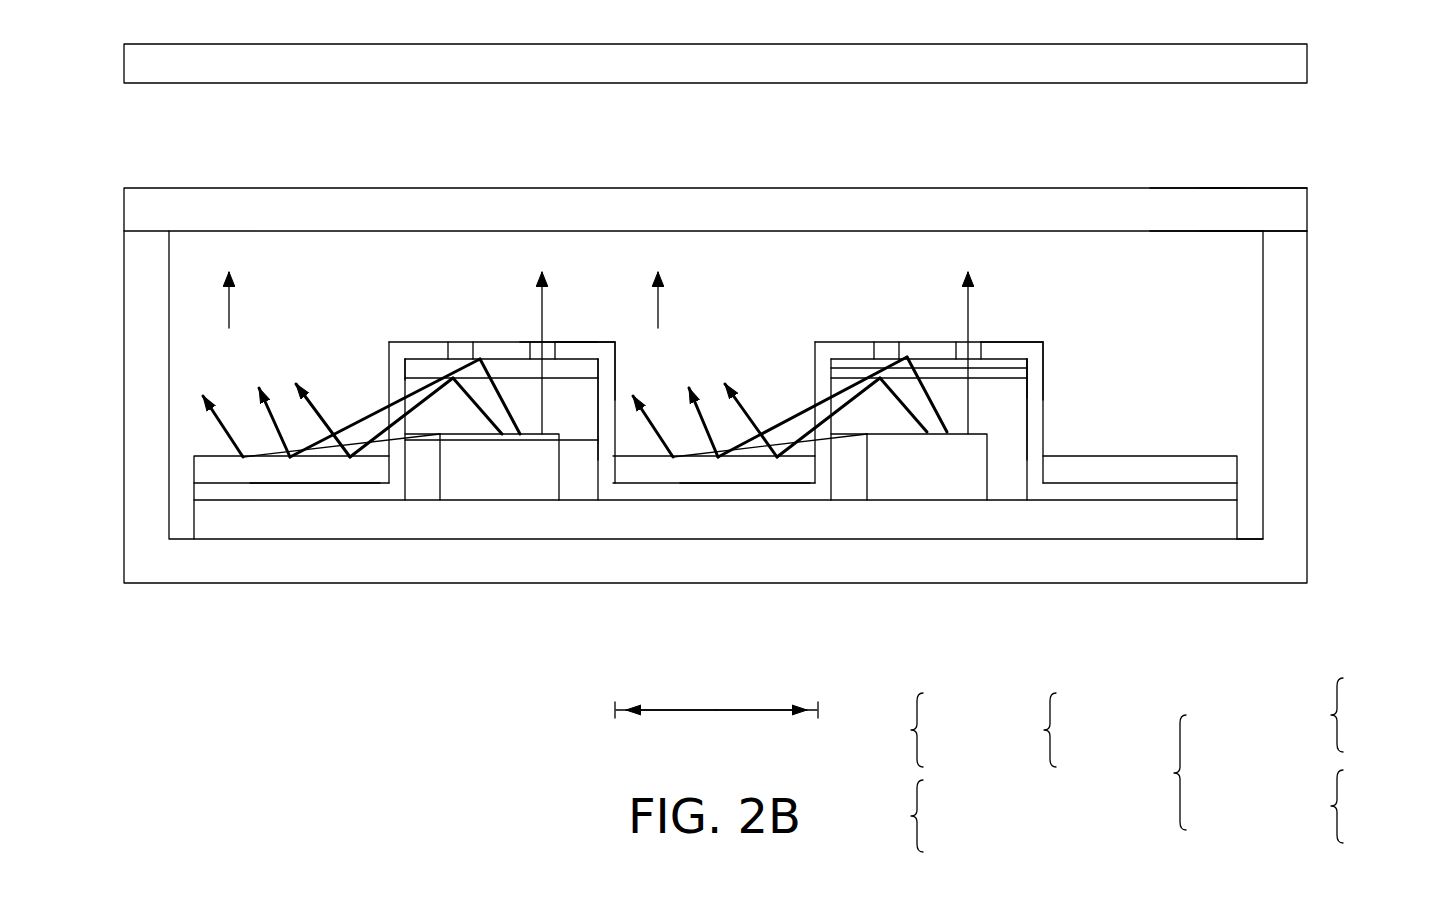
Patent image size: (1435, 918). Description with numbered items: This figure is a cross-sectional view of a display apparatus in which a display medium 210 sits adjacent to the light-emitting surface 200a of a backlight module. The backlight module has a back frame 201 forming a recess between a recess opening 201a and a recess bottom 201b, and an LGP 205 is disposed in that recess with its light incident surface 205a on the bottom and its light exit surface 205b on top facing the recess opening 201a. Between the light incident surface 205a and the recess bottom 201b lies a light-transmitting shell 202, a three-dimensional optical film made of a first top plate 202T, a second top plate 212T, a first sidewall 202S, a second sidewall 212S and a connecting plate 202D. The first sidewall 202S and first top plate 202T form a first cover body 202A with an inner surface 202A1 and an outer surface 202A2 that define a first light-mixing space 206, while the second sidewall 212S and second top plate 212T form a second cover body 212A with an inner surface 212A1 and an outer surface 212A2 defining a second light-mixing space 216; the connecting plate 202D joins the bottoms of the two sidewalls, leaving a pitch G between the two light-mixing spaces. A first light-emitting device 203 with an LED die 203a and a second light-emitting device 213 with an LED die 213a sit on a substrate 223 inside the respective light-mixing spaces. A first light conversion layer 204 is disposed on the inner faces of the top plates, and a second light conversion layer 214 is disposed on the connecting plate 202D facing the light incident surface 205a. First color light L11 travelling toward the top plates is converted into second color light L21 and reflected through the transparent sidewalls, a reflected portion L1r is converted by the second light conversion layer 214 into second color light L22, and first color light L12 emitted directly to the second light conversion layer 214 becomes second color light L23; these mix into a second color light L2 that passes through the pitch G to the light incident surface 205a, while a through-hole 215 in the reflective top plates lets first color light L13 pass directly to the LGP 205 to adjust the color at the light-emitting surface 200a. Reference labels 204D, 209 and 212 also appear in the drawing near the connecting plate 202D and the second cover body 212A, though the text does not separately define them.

The display medium 210 is at (1285, 60).
The light-emitting surface 200a is at (1230, 135).
The back frame 201 is at (1287, 455).
The recess opening 201a is at (1266, 229).
The recess bottom 201b is at (1249, 536).
The LGP 205 is at (1115, 223).
The light incident surface 205a is at (1231, 235).
The light exit surface 205b is at (1221, 185).
The second light conversion layer 214 is at (250, 467).
The substrate 223 is at (1183, 520).
The dielectric portion of first sensing unit 204D is at (302, 488).
The connecting plate 202D is at (735, 488).
The first light shielding structure 212 is at (1058, 730).
The second top plate 212T is at (435, 340).
The second sidewall 212S is at (385, 392).
The second cover body 212A is at (1341, 809).
The inner surface 212A1 is at (590, 337).
The outer surface 212A2 is at (581, 381).
The second light-emitting device 213 is at (926, 816).
The LED die 213a is at (485, 472).
The second light-mixing space 216 is at (424, 461).
The first light conversion layer 204 is at (557, 368).
The through-hole 215 is at (549, 335).
The light-transmitting shell 202 is at (1190, 773).
The first top plate 202T is at (863, 340).
The first sidewall 202S is at (815, 392).
The first cover body 202A is at (1341, 717).
The inner surface 202A1 is at (1013, 335).
The outer surface 202A2 is at (996, 381).
The first light-emitting device 203 is at (926, 730).
The LED die 203a is at (913, 472).
The first light-mixing space 206 is at (854, 463).
The light absorbing layer 209 is at (853, 368).
The first color light L11 is at (480, 408).
The first color light L12 is at (323, 447).
The first color light L13 is at (754, 334).
The first color light L1r is at (428, 393).
The mixed second color light L2 is at (230, 297).
The second color light L21 is at (527, 402).
The second color light L22 is at (476, 404).
The second color light L23 is at (431, 406).
The pitch G is at (716, 698).